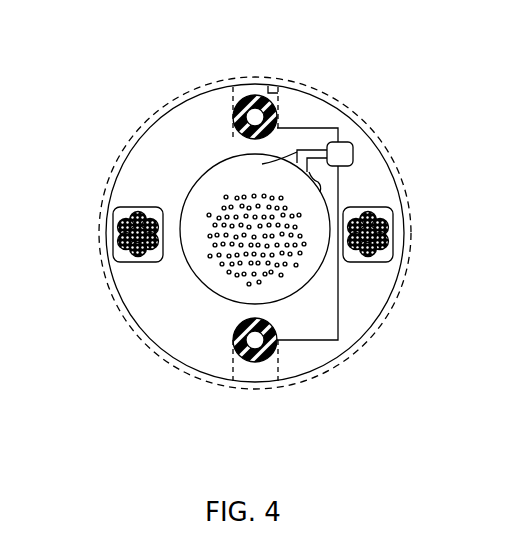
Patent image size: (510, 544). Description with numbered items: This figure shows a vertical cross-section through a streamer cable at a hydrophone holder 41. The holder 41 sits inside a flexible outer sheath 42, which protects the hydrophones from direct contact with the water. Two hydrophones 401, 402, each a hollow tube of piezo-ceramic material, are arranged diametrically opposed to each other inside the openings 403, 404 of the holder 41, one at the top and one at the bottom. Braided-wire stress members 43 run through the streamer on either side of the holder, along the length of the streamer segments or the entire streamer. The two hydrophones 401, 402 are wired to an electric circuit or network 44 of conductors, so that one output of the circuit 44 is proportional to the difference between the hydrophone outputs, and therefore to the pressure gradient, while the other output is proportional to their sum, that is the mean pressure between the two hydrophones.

The hydrophone holder 41 is at (128, 411).
The flexible outer sheath 42 is at (135, 132).
The stress member 43 is at (163, 195).
The electric circuit or network of conductors 44 is at (354, 160).
The hydrophone 401 is at (236, 126).
The hydrophone 402 is at (275, 323).
The opening 403 is at (272, 92).
The opening 404 is at (272, 366).